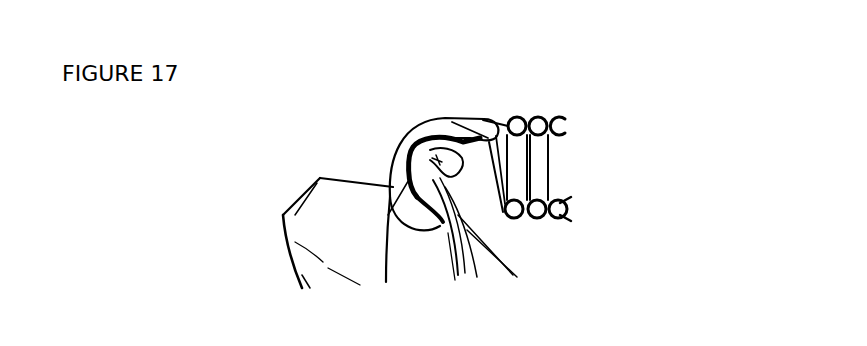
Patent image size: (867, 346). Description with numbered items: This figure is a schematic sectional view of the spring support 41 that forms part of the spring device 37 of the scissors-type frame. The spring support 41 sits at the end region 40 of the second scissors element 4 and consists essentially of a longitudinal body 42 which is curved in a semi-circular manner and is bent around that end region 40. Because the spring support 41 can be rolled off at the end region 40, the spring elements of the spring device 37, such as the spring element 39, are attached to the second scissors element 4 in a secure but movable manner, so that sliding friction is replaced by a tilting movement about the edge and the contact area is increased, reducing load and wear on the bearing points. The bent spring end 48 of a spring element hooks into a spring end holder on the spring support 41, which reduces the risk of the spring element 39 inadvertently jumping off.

The second scissors element 4 is at (317, 233).
The spring device 37 is at (522, 68).
The spring element 39 is at (537, 218).
The end region 40 is at (380, 116).
The spring support 41 is at (393, 241).
The longitudinal body 42 is at (453, 143).
The bent spring end 48 is at (398, 152).